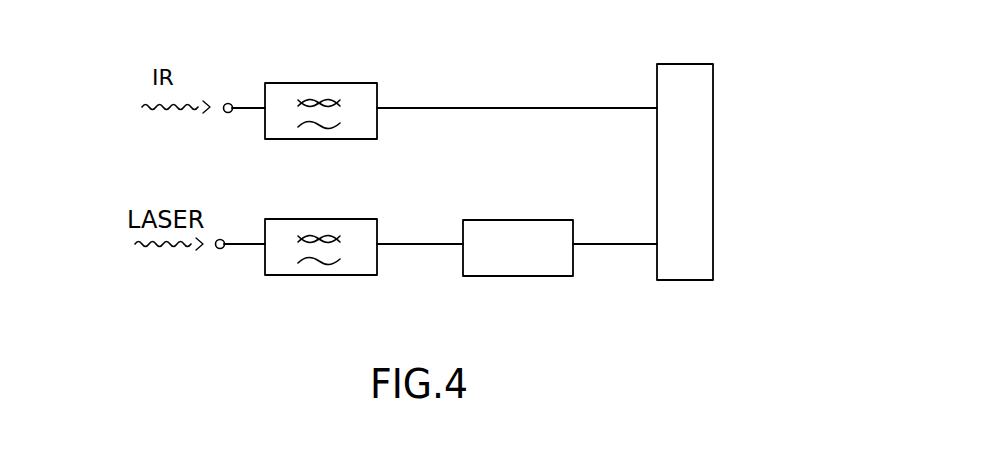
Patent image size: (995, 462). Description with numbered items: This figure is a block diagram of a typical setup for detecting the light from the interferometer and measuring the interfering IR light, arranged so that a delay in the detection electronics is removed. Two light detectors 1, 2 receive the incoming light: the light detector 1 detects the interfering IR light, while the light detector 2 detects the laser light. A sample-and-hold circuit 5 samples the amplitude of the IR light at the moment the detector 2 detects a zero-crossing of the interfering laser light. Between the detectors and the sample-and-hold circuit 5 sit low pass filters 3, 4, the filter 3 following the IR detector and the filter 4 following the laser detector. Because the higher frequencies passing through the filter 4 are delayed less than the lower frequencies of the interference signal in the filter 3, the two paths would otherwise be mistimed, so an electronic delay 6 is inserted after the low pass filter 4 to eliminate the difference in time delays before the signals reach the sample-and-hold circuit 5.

The light detector 1 is at (225, 124).
The light detector 2 is at (220, 230).
The low pass filter 3 is at (357, 83).
The low pass filter 4 is at (353, 275).
The sample-and-hold circuit 5 is at (712, 184).
The electronic delay 6 is at (518, 276).